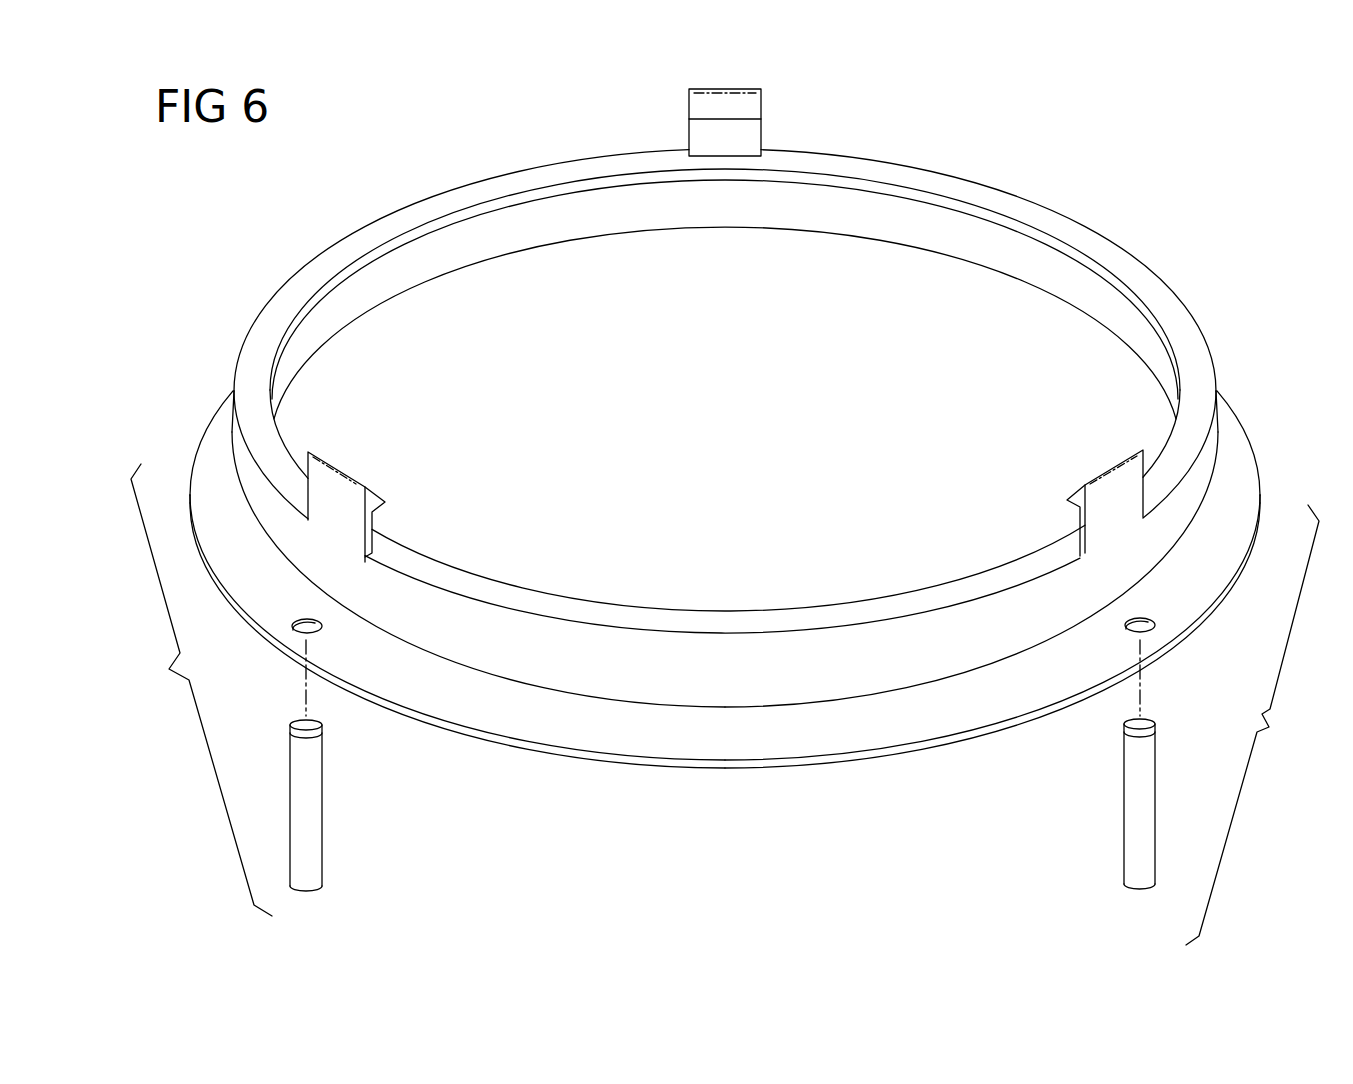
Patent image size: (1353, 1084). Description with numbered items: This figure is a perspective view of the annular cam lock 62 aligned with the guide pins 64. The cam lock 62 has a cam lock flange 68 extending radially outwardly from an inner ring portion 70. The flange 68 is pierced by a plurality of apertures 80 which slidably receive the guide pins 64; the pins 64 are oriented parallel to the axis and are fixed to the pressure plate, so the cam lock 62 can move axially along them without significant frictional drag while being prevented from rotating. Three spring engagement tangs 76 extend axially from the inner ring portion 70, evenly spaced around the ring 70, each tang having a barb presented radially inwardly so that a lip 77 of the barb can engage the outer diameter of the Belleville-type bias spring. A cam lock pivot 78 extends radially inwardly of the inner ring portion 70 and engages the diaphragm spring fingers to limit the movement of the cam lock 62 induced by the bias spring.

The cam lock 62 is at (452, 270).
The guide pins 64 is at (322, 790).
The cam lock flange 68 is at (787, 768).
The inner ring portion 70 is at (516, 734).
The spring engagement tangs 76 is at (317, 452).
The lip 77 is at (747, 119).
The cam lock pivot 78 is at (1097, 274).
The apertures 80 is at (291, 619).